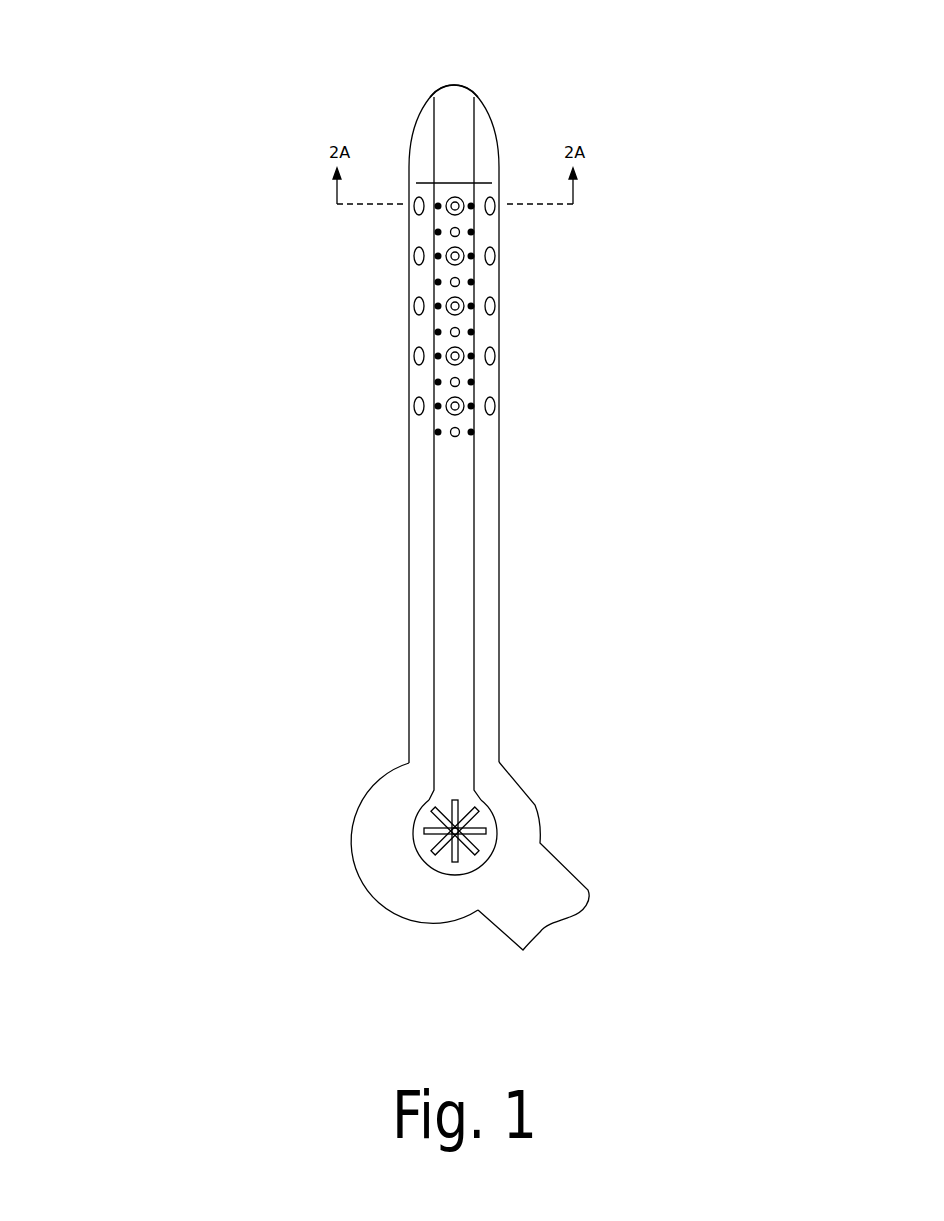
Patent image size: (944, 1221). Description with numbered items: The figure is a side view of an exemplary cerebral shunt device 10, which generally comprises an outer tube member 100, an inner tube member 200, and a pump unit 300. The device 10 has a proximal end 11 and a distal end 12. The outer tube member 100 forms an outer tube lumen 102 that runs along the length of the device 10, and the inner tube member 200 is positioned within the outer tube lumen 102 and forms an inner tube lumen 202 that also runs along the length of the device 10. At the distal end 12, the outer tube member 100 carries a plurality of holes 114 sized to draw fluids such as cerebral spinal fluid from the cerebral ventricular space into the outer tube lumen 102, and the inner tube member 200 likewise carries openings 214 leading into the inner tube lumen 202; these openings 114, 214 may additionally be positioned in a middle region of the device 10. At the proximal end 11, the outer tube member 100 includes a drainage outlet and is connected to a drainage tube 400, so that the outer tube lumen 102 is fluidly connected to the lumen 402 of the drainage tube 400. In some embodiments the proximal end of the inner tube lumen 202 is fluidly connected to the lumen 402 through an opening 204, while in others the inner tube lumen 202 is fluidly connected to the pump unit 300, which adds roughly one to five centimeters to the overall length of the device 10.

The cerebral shunt device 10 is at (183, 215).
The proximal end 11 is at (559, 738).
The distal end 12 is at (536, 100).
The outer tube member 100 is at (498, 463).
The outer tube lumen 102 is at (494, 519).
The openings 114 is at (493, 257).
The inner tube member 200 is at (433, 483).
The inner tube lumen 202 is at (441, 581).
The opening 204 is at (486, 873).
The openings 214 is at (457, 308).
The pump unit 300 is at (347, 827).
The drainage tube 400 is at (558, 867).
The lumen of drainage tube 402 is at (538, 910).